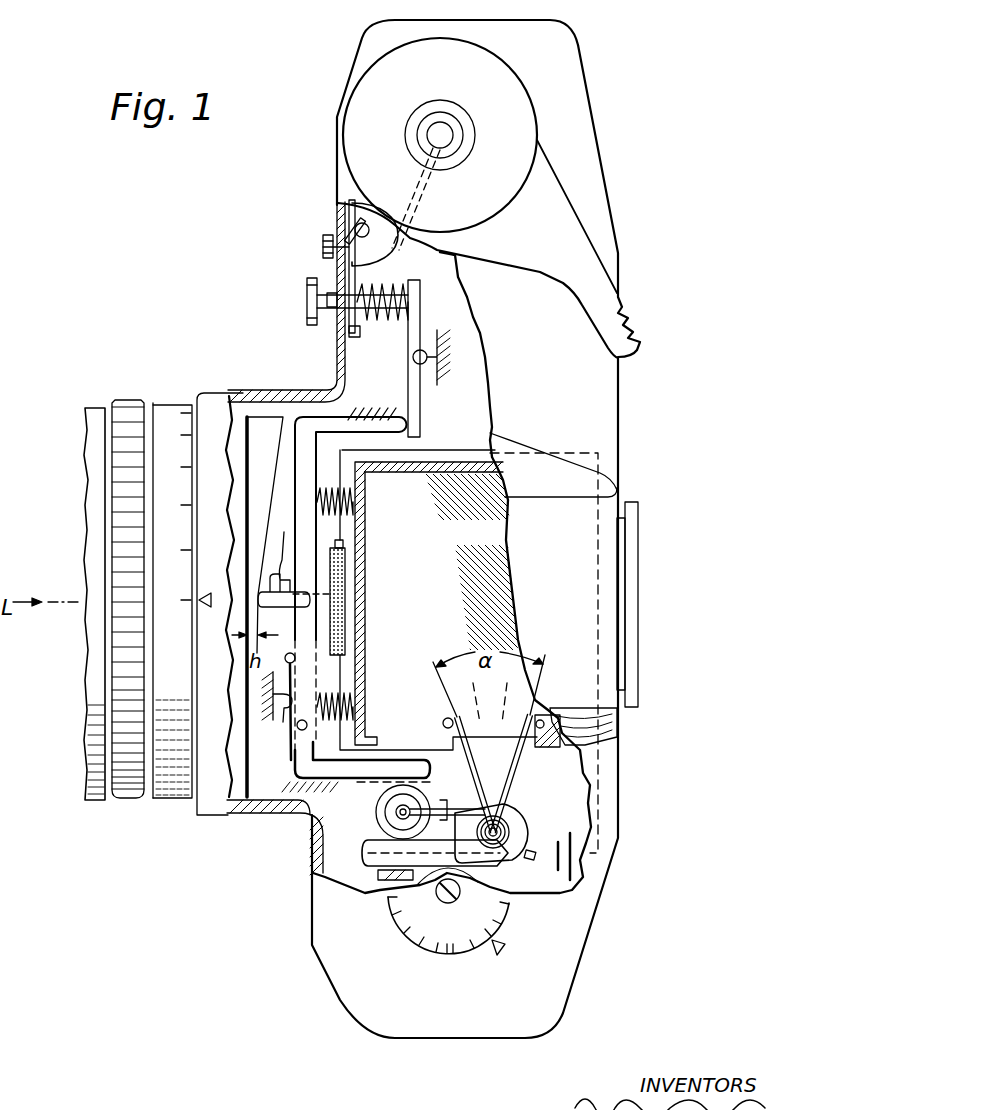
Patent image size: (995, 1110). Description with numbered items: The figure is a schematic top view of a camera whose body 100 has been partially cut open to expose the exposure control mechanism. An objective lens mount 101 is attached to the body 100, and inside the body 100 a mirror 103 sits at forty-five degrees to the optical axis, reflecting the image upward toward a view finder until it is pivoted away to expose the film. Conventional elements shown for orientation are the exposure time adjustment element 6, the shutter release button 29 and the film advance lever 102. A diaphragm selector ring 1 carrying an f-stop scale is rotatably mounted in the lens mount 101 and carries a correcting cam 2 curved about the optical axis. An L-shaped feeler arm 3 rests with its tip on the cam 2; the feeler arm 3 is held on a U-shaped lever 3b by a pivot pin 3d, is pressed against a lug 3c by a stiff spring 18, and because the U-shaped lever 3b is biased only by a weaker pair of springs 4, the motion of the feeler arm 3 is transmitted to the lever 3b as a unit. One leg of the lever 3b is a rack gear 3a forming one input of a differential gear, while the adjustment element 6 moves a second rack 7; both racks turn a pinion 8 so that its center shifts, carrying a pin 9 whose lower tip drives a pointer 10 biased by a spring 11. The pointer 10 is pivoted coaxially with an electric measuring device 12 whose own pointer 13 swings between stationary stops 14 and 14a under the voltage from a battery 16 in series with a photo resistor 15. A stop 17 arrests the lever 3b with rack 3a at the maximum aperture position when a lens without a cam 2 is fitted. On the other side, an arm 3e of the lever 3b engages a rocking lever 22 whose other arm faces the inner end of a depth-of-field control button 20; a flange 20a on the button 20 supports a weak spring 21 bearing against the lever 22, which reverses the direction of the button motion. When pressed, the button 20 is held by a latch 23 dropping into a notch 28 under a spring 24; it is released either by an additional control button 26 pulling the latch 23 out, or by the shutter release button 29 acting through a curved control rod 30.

The diaphragm selector ring 1 is at (174, 406).
The correcting cam 2 is at (277, 465).
The feeler arm 3 is at (362, 601).
The rack gear 3a is at (387, 773).
The U-shaped lever 3b is at (305, 527).
The lug 3c is at (296, 658).
The pivot pin 3d is at (302, 731).
The arm 3e is at (398, 414).
The springs 4 is at (355, 500).
The exposure time adjustment element 6 is at (445, 953).
The second rack 7 is at (378, 850).
The pinion 8 is at (377, 822).
The pin 9 is at (390, 772).
The pointer 10 is at (472, 765).
The spring 11 is at (530, 858).
The electric measuring device 12 is at (520, 833).
The pointer 13 is at (507, 788).
The stop 14 is at (443, 722).
The stop 14a is at (612, 725).
The photo resistor 15 is at (345, 575).
The battery 16 is at (574, 857).
The stop 17 is at (282, 712).
The spring 18 is at (290, 556).
The depth-of-field control button 20 is at (307, 301).
The flange 20a is at (386, 290).
The spring 21 is at (388, 322).
The rocking lever 22 is at (420, 410).
The latch 23 is at (350, 332).
The spring 24 is at (344, 208).
The additional control button 26 is at (323, 246).
The notch 28 is at (330, 292).
The shutter release button 29 is at (439, 132).
The curved control rod 30 is at (420, 197).
The camera body 100 is at (362, 993).
The objective lens mount 101 is at (96, 788).
The film advance lever 102 is at (560, 230).
The mirror 103 is at (490, 540).